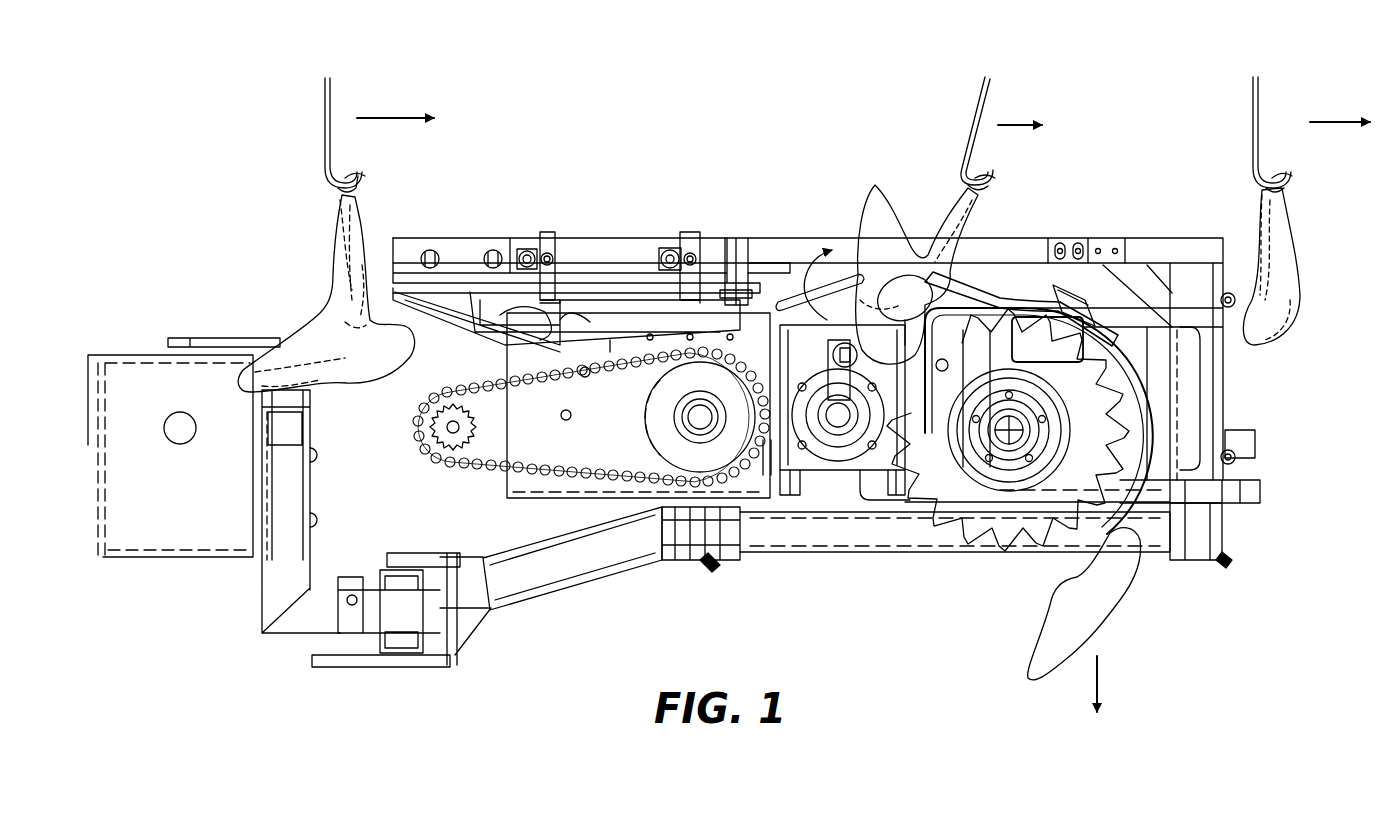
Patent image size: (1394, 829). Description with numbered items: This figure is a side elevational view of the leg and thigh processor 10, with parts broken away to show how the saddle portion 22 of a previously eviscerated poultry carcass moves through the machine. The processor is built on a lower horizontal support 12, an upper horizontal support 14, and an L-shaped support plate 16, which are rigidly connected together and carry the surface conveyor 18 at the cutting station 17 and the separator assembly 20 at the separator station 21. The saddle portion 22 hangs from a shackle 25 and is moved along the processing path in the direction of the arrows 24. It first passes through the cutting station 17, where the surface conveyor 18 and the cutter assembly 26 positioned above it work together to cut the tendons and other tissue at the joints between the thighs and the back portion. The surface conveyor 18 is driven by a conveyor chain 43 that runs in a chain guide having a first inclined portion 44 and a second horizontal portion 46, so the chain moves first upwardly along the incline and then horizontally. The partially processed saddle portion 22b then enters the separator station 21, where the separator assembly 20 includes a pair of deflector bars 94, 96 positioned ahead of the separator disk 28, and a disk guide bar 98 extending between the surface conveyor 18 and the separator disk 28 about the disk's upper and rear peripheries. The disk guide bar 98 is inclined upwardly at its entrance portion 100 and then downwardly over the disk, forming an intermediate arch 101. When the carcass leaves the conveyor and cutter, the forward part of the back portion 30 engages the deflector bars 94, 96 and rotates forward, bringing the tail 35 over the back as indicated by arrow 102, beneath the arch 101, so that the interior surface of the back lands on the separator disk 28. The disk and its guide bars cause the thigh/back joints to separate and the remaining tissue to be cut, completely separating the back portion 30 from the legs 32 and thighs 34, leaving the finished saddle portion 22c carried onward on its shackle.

The leg and thigh processor 10 is at (1153, 208).
The lower horizontal support 12 is at (866, 552).
The upper horizontal support 14 is at (757, 240).
The L-shaped support plate 16 is at (820, 480).
The cutting station 17 is at (650, 232).
The surface conveyor 18 is at (440, 472).
The separator assembly 20 is at (970, 551).
The separator station 21 is at (1043, 232).
The saddle portion 22 is at (316, 322).
The saddle portion 22b is at (975, 222).
The saddle portion 22c is at (1268, 243).
The arrows 24 is at (400, 112).
The shackle hook 25 is at (325, 118).
The cutter assembly 26 is at (595, 237).
The separator disk 28 is at (1103, 446).
The back portion 30 is at (368, 350).
The legs 32 is at (350, 212).
The thighs 34 is at (367, 270).
The tail 35 is at (250, 385).
The conveyor chain 43 is at (418, 425).
The first inclined portion 44 is at (455, 378).
The second horizontal portion 46 is at (535, 375).
The deflector bar 94 is at (978, 340).
The deflector bar 96 is at (1133, 421).
The disk guide bar 98 is at (1010, 300).
The entrance portion 100 is at (790, 303).
The intermediate arch 101 is at (915, 330).
The arrow 102 is at (820, 263).